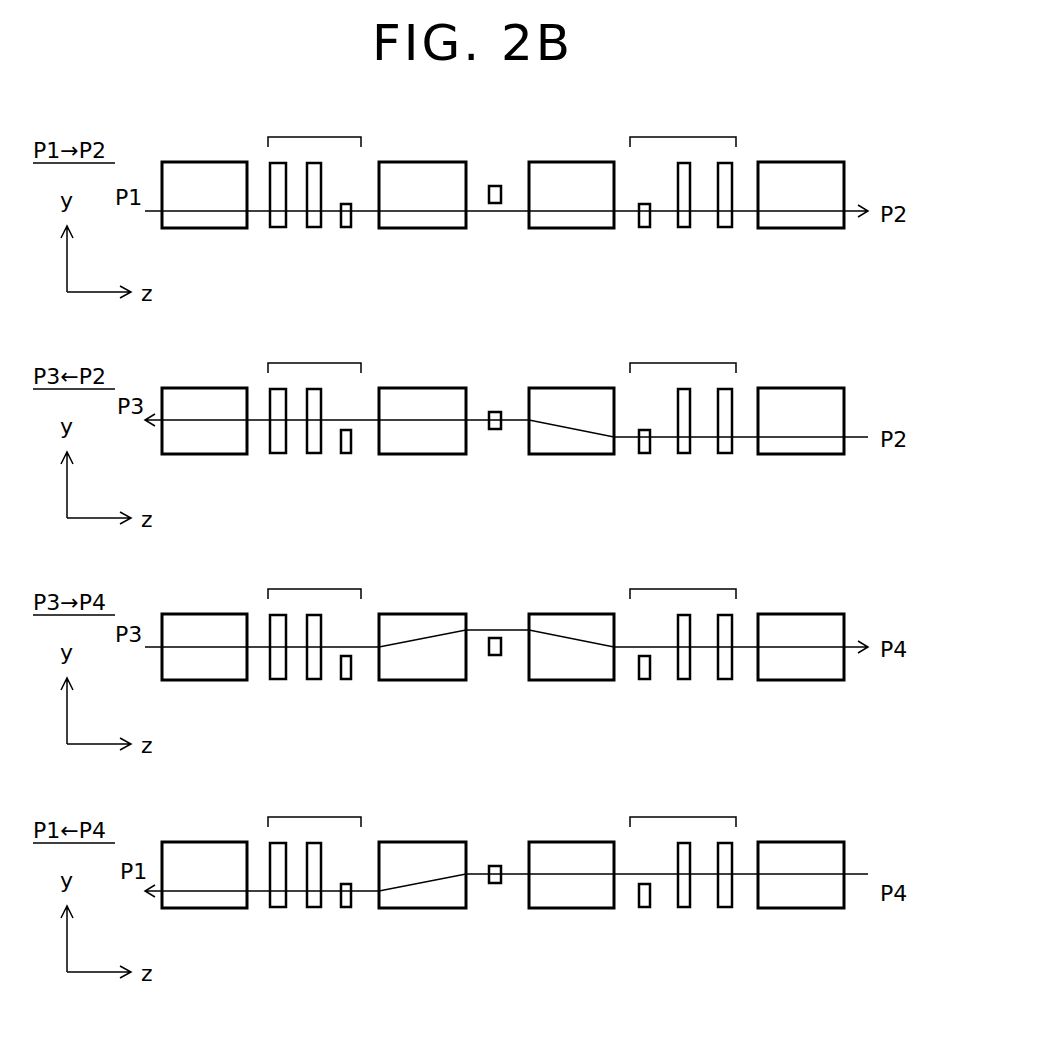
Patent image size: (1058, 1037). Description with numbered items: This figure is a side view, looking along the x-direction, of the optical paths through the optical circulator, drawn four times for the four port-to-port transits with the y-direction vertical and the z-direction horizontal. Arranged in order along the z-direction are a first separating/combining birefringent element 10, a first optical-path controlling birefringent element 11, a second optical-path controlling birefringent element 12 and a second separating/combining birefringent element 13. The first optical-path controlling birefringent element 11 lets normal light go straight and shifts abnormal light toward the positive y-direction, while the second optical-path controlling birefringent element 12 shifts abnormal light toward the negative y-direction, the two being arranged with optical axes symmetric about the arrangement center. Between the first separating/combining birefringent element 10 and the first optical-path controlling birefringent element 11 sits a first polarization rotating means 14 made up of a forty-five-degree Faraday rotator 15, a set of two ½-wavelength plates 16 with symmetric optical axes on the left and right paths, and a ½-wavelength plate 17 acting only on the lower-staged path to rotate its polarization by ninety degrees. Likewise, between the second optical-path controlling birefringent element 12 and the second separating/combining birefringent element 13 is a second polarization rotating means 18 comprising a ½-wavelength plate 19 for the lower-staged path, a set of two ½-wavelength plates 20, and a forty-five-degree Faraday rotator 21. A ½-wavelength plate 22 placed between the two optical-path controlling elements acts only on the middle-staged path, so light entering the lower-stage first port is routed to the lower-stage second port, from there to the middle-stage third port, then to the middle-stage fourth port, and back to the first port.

The first separating/combining birefringent element 10 is at (205, 168).
The first optical-path controlling birefringent element 11 is at (421, 170).
The second optical-path controlling birefringent element 12 is at (568, 170).
The second separating/combining birefringent element 13 is at (806, 170).
The first polarization rotating means 14 is at (314, 466).
The 45-degree Faraday rotator 15 is at (281, 228).
The set of two ½-wavelength plates 16 is at (314, 228).
The ½-wavelength plate 17 is at (347, 228).
The second polarization rotating means 18 is at (683, 466).
The ½-wavelength plate 19 is at (646, 228).
The set of two ½-wavelength plates 20 is at (684, 228).
The 45-degree Faraday rotator 21 is at (725, 228).
The ½-wavelength plate 22 is at (493, 186).